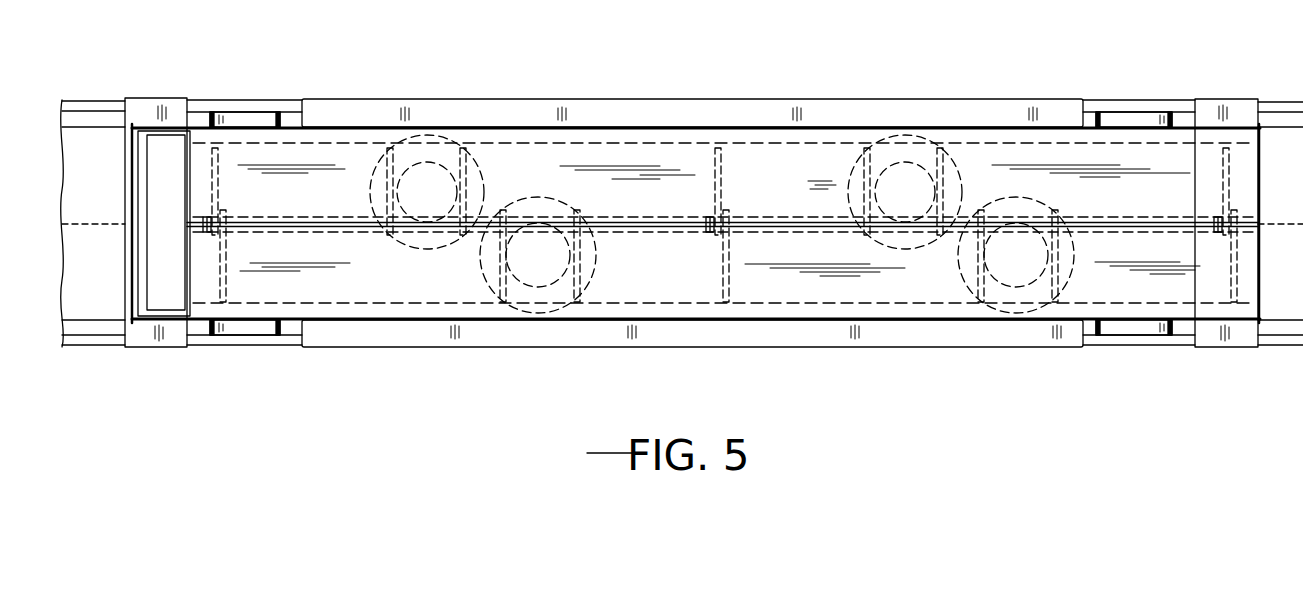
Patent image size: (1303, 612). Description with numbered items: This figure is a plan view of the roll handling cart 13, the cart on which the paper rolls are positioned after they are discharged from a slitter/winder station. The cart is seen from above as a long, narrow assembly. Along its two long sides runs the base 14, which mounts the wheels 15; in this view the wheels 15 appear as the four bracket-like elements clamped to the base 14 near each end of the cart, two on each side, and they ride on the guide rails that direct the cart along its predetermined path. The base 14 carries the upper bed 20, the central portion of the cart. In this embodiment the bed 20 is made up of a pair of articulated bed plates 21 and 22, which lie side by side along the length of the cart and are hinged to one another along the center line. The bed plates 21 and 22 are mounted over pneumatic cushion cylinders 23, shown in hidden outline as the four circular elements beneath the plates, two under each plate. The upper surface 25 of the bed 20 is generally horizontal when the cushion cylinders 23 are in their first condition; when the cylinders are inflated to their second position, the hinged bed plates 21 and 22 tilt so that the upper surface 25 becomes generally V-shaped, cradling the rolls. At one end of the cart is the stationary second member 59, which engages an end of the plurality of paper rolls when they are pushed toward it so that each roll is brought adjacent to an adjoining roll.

The roll handling cart 13 is at (955, 347).
The base 14 is at (688, 347).
The wheels 15 is at (263, 112).
The bed 20 is at (393, 320).
The bed plate 21 is at (1193, 215).
The bed plate 22 is at (1123, 302).
The pneumatic cushion cylinders 23 is at (476, 160).
The upper surface 25 is at (786, 198).
The stationary second member 59 is at (165, 184).